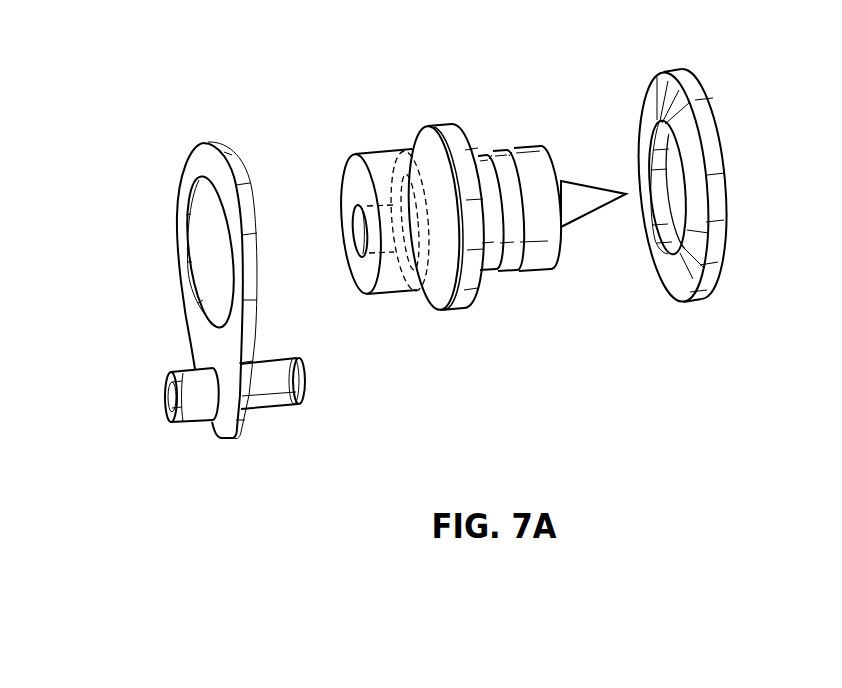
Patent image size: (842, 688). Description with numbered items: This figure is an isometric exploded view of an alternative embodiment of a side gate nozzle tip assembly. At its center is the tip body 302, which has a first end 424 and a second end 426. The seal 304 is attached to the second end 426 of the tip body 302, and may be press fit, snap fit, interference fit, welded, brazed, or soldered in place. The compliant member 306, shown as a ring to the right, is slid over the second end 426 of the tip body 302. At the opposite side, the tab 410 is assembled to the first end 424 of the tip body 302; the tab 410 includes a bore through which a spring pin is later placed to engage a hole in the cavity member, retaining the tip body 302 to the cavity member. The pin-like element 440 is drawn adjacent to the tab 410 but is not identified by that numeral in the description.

The tab 410 is at (210, 425).
The pin 440 is at (265, 358).
The tip body 302 is at (403, 290).
The first end 424 is at (368, 152).
The seal 304 is at (550, 262).
The second end 426 is at (578, 181).
The compliant member 306 is at (716, 287).